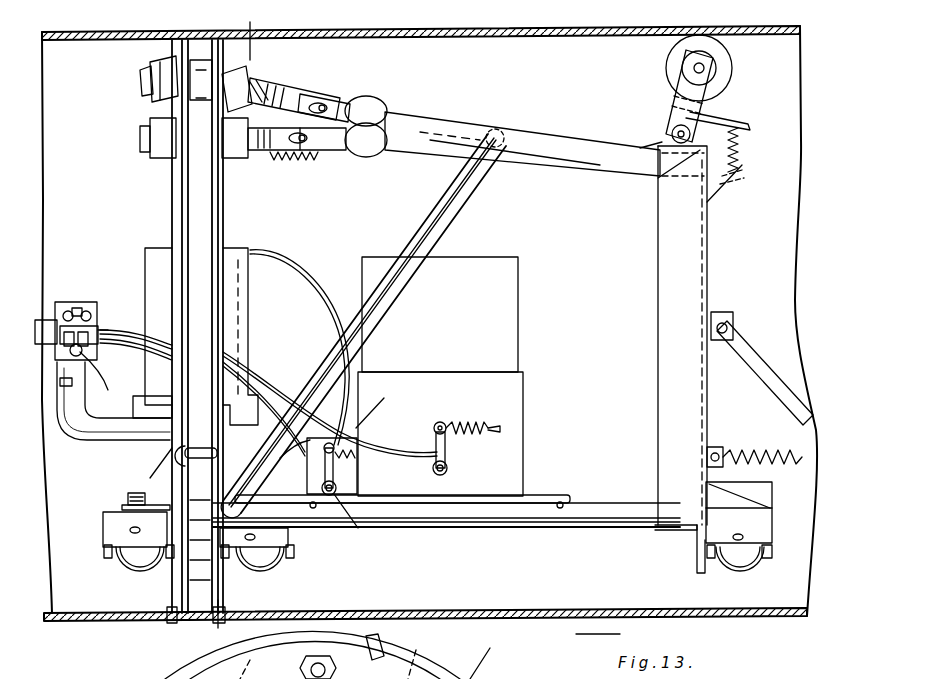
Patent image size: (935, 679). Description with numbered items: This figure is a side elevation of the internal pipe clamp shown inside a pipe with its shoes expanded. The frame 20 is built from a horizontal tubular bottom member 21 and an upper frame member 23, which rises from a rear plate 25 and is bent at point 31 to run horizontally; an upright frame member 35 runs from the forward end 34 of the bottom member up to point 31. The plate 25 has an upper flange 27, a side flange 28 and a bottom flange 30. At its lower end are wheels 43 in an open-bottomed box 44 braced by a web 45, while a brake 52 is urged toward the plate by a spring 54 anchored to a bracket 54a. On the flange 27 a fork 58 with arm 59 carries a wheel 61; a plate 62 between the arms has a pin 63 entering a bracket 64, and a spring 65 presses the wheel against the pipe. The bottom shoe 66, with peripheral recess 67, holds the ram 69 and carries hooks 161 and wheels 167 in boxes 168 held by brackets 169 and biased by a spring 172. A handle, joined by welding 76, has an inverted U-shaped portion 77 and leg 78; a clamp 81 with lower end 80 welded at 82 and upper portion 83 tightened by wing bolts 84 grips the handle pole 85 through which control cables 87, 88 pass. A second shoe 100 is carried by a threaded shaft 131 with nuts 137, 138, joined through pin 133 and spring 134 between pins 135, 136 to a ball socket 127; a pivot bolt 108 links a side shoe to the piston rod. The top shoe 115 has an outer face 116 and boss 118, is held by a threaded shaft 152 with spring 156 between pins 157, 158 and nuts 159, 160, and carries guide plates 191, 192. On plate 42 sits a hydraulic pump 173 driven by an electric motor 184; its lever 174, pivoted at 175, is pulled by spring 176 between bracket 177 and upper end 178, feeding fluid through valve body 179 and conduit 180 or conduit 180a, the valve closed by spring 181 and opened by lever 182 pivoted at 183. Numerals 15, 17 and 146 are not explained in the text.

The arm 15 is at (230, 22).
The section line 17 is at (208, 630).
The frame 20 is at (446, 549).
The horizontal tubular bottom member 21 is at (446, 546).
The upper frame member 23 is at (580, 160).
The plate 25 is at (708, 256).
The upper forwardly extending flange 27 is at (660, 176).
The forwardly extending side flange 28 is at (662, 258).
The bottom flange 30 is at (660, 530).
The bend point 31 is at (500, 132).
The forward end of frame member 34 is at (326, 540).
The upright frame member 35 is at (363, 326).
The plate 42 is at (552, 494).
The wheels 43 is at (752, 560).
The rectangular open-bottomed box 44 is at (758, 528).
The web 45 is at (718, 507).
The brake 52 is at (758, 362).
The spring 54 is at (730, 312).
The bracket 54a is at (759, 429).
The fork 58 is at (668, 116).
The arm 59 is at (662, 78).
The wheel 61 is at (728, 70).
The rearwardly extending plate 62 is at (720, 112).
The pin 63 is at (739, 183).
The bracket 64 is at (742, 164).
The spring 65 is at (734, 122).
The shoe 66 is at (170, 584).
The peripheral recess 67 is at (216, 598).
The ram 69 is at (240, 290).
The welding 76 is at (152, 446).
The inverted U-shaped portion 77 is at (70, 436).
The leg 78 is at (113, 401).
The lower end of clamp 80 is at (100, 344).
The clamp 81 is at (94, 315).
The weld 82 is at (70, 346).
The upper portion of clamp 83 is at (84, 302).
The wing bolts 84 is at (99, 381).
The tubular handle pole 85 is at (45, 320).
The control cable 87 is at (254, 374).
The control cable 88 is at (268, 396).
The second shoe 100 is at (222, 212).
The pivot bolt 108 is at (495, 652).
The top shoe 115 is at (150, 58).
The outer face 116 is at (380, 632).
The boss 118 is at (265, 669).
The ball socket 127 is at (391, 133).
The threaded shaft 131 is at (262, 150).
The pin 133 is at (318, 161).
The spring 134 is at (307, 180).
The pin 135 is at (306, 162).
The pin 136 is at (292, 162).
The inner nut 137 is at (238, 150).
The outer nut 138 is at (164, 150).
The plate 146 is at (559, 655).
The threaded shaft 152 is at (330, 100).
The spring 156 is at (298, 82).
The pin 157 is at (338, 104).
The pin 158 is at (262, 92).
The inner nut 159 is at (236, 72).
The outer nut 160 is at (162, 92).
The pipe end engaging hooks 161 is at (196, 442).
The wheels 167 is at (126, 566).
The rectangular box 168 is at (104, 540).
The brackets 169 is at (116, 490).
The spring 172 is at (120, 508).
The hydraulic pump 173 is at (463, 434).
The lever 174 is at (421, 433).
The pivot 175 is at (448, 468).
The spring 176 is at (470, 422).
The bracket 177 is at (524, 435).
The upper end of lever 178 is at (446, 420).
The valve body 179 is at (374, 399).
The fluid conduit 180 is at (300, 470).
The hydraulic conduit 180a is at (312, 272).
The spring 181 is at (356, 460).
The lever 182 is at (340, 488).
The pivot 183 is at (363, 519).
The electric motor 184 is at (500, 262).
The guide plate 191 is at (436, 650).
The guide plate 192 is at (232, 660).